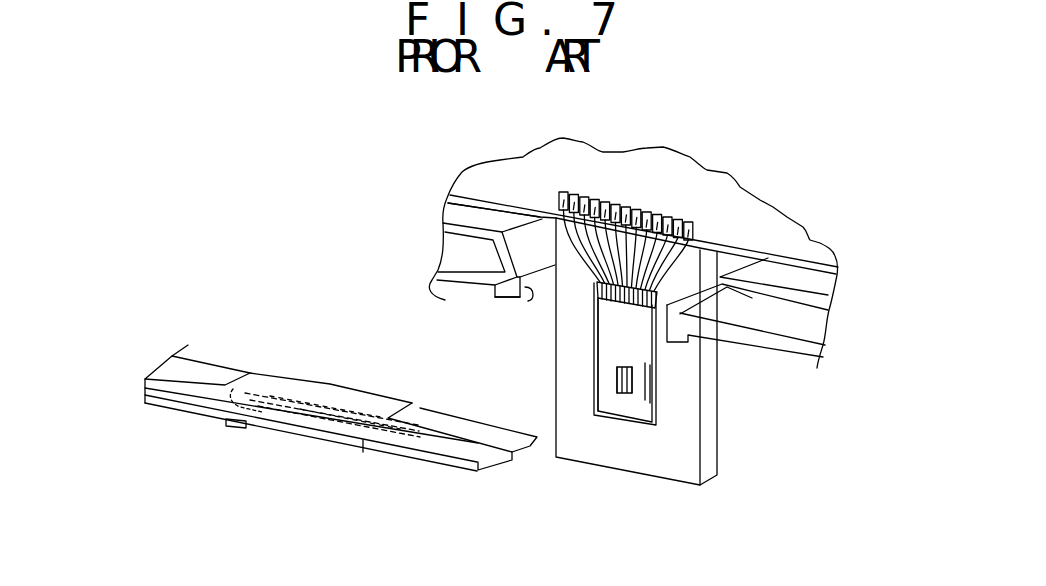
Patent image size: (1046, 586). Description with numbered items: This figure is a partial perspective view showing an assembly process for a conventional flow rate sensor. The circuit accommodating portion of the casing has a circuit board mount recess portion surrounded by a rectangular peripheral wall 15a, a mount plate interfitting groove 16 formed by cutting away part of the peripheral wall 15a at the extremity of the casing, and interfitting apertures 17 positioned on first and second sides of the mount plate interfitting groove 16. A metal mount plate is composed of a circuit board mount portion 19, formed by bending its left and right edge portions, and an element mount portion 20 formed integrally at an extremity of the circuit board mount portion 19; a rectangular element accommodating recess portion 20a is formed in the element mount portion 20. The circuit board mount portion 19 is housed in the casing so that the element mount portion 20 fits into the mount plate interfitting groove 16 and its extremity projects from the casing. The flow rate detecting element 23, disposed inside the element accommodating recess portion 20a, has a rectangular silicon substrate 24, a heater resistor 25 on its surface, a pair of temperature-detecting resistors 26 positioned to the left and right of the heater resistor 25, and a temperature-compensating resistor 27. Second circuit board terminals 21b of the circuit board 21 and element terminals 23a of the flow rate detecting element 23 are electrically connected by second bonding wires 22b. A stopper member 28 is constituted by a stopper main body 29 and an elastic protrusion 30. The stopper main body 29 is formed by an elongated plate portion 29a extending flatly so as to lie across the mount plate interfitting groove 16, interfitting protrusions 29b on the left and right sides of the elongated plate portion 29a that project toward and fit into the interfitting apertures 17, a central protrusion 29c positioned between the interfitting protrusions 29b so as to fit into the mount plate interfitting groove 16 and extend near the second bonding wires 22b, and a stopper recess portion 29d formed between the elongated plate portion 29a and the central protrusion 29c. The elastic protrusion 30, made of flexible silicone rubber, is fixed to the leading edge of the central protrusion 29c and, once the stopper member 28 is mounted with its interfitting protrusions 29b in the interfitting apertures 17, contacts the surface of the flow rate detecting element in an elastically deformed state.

The insertion opening 15a is at (456, 229).
The lower wall 16 is at (500, 302).
The guide portion 17 is at (455, 263).
The mounting bracket 19 is at (800, 263).
The housing 20 is at (632, 373).
The slot 20a is at (650, 393).
The connector 21 is at (603, 316).
The terminal pins 21b is at (560, 190).
The circuit board 22b is at (668, 258).
The contact plate 23 is at (607, 371).
The connector portion 23a is at (600, 297).
The wiring board 24 is at (600, 343).
The contact 25 is at (620, 395).
The contact 26 is at (617, 394).
The contact 27 is at (651, 374).
The flexible printed circuit board 28 is at (332, 420).
The flexible cable 29 is at (332, 420).
The conductor portion 29a is at (327, 390).
The reinforcing plate 29b is at (215, 372).
The insulating layer 29c is at (363, 453).
The projection 29d is at (246, 430).
The conductor pattern 30 is at (420, 445).